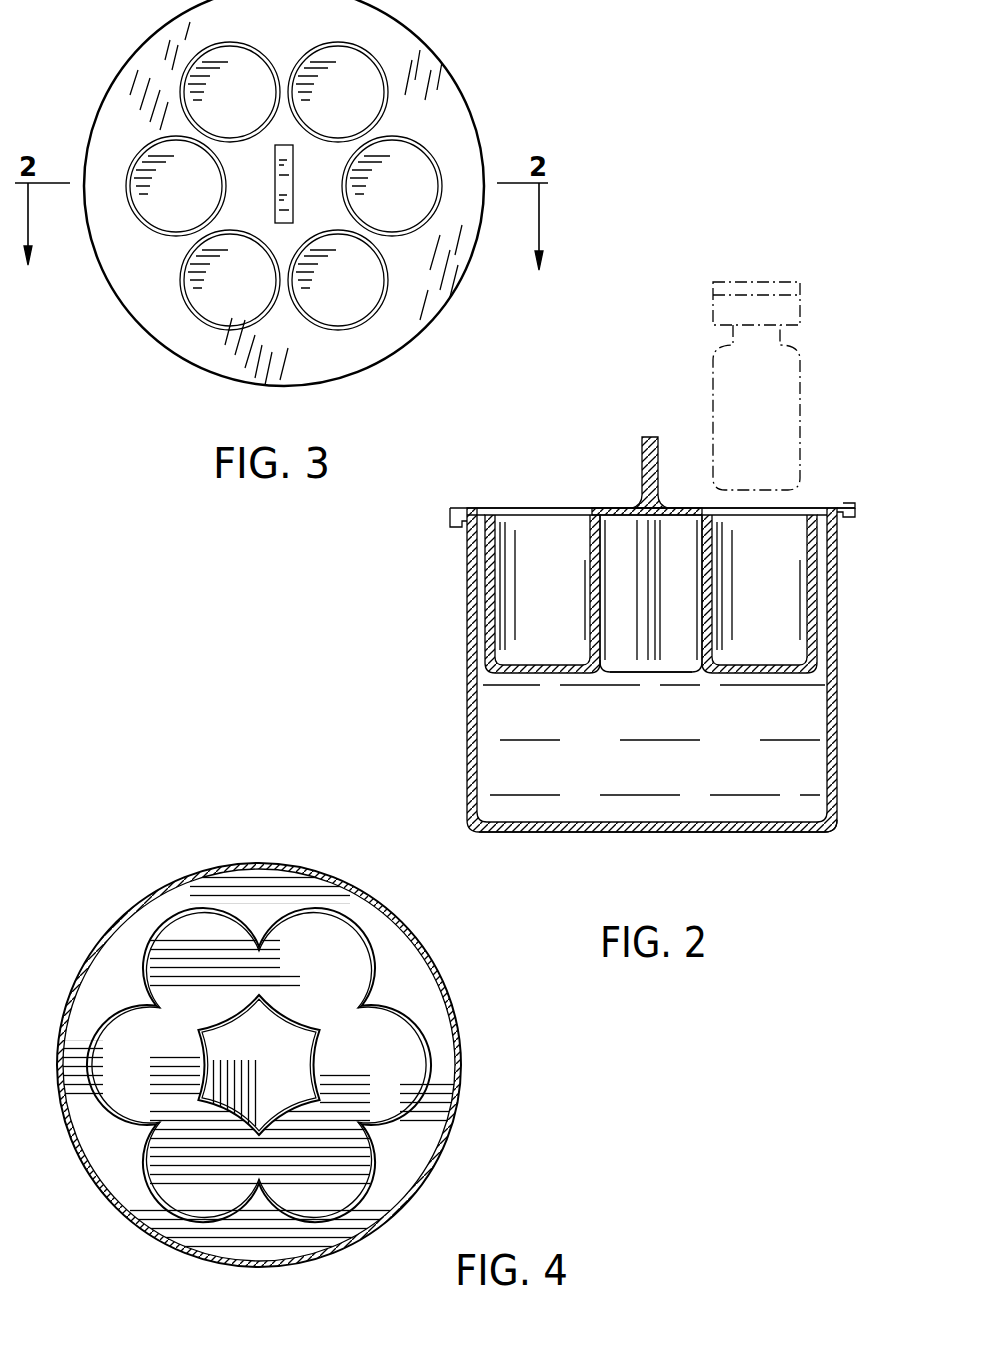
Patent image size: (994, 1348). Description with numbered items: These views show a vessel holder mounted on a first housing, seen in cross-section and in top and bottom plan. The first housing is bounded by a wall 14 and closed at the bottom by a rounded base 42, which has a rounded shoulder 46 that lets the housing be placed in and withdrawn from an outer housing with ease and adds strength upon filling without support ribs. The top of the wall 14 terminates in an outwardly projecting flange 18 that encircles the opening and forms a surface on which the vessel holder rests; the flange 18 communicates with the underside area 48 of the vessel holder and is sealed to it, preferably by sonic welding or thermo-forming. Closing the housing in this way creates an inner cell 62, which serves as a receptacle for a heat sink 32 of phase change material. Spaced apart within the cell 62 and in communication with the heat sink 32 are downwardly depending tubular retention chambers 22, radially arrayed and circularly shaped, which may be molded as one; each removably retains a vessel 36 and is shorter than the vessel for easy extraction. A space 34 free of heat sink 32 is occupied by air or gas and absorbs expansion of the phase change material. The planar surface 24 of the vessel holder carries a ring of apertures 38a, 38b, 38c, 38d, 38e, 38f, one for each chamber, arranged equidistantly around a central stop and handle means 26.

In FIG. 2, the wall 14 is at (462, 719).
In FIG. 2, the flange 18 is at (847, 516).
In FIG. 2, the downwardly depending tubular retention chamber 22 is at (813, 653).
In FIG. 4, the downwardly depending tubular retention chamber 22 is at (377, 1066).
In FIG. 3, the planar surface 24 is at (418, 87).
In FIG. 2, the stop and handle means 26 is at (640, 455).
In FIG. 2, the heat sink 32 is at (777, 763).
In FIG. 2, the space 34 is at (620, 547).
In FIG. 4, the space 34 is at (279, 1071).
In FIG. 2, the vessel 36 is at (780, 395).
In FIG. 3, the aperture 38a is at (417, 206).
In FIG. 3, the aperture 38b is at (363, 300).
In FIG. 3, the aperture 38c is at (255, 300).
In FIG. 3, the aperture 38d is at (201, 206).
In FIG. 3, the aperture 38e is at (255, 112).
In FIG. 3, the aperture 38f is at (363, 112).
In FIG. 2, the base 42 is at (583, 830).
In FIG. 2, the shoulder 46 is at (820, 827).
In FIG. 2, the underside area 48 is at (833, 503).
In FIG. 4, the underside area 48 is at (262, 917).
In FIG. 2, the inner cell 62 is at (513, 770).